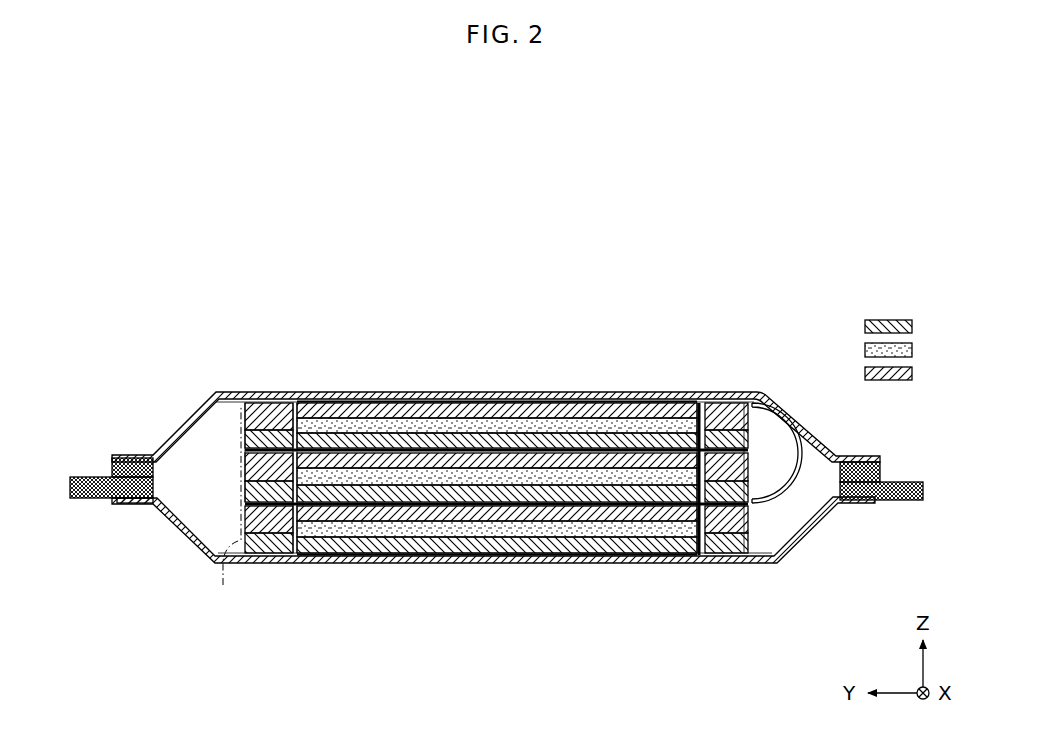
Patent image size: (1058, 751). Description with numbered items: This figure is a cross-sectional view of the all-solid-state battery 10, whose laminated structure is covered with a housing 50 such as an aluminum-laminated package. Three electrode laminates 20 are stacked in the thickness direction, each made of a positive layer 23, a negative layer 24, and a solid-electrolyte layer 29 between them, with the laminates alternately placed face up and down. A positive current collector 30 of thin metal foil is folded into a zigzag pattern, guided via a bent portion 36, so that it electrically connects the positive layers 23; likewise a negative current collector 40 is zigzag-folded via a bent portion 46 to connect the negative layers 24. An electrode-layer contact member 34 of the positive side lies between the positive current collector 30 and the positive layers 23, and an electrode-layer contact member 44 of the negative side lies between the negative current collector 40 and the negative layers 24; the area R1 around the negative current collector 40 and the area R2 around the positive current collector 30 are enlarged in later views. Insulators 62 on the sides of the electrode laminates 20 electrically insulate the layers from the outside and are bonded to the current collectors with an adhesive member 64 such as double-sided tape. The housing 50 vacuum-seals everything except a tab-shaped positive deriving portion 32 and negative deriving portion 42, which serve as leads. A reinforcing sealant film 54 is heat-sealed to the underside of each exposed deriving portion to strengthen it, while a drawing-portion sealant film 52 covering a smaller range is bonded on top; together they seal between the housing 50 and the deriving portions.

The all-solid-state battery 10 is at (258, 298).
The electrode laminate 20 is at (702, 425).
The positive layer 23 is at (905, 327).
The negative layer 24 is at (905, 374).
The solid-electrolyte layer 29 is at (905, 350).
The positive current collector 30 is at (749, 455).
The positive deriving portion 32 is at (918, 482).
The electrode-layer contact member 34 is at (320, 563).
The bent portion 36 is at (226, 507).
The negative current collector 40 is at (243, 502).
The negative deriving portion 42 is at (76, 477).
The electrode-layer contact member 44 is at (432, 392).
The bent portion 46 is at (792, 494).
The housing 50 is at (235, 392).
The drawing-portion sealant film 52 is at (113, 468).
The reinforcing sealant film 54 is at (76, 498).
The insulator 62 is at (245, 418).
The adhesive member 64 is at (245, 440).
The area R1 is at (413, 565).
The area R2 is at (580, 392).